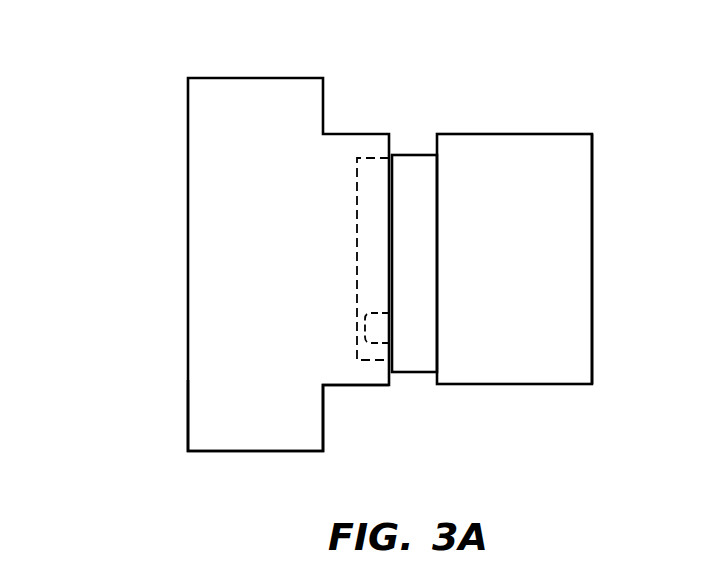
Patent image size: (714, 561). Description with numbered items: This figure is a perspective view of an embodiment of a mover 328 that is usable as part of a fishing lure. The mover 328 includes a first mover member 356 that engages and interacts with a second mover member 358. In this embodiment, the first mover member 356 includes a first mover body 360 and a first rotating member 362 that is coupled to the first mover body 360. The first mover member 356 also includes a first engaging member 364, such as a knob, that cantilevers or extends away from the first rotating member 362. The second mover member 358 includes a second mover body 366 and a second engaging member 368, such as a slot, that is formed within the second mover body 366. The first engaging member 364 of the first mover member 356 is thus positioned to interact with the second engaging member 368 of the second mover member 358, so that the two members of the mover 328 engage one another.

The mover 328 is at (130, 77).
The second mover body 366 is at (230, 260).
The second mover member 358 is at (220, 376).
The second engaging member 368 is at (363, 240).
The first engaging member 364 is at (372, 332).
The first rotating member 362 is at (410, 167).
The first mover body 360 is at (550, 203).
The first mover member 356 is at (562, 311).